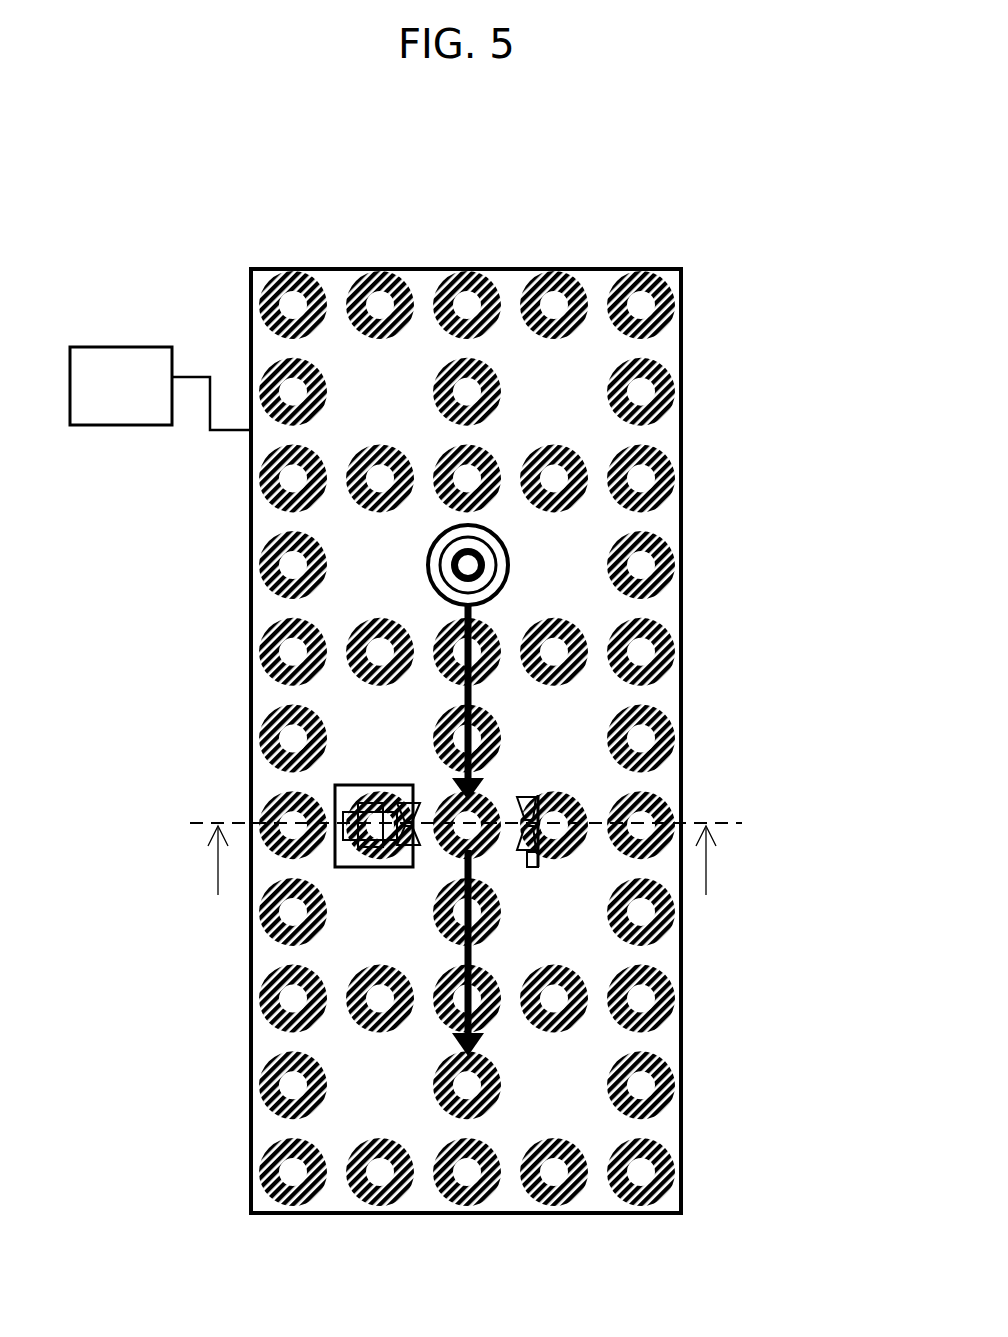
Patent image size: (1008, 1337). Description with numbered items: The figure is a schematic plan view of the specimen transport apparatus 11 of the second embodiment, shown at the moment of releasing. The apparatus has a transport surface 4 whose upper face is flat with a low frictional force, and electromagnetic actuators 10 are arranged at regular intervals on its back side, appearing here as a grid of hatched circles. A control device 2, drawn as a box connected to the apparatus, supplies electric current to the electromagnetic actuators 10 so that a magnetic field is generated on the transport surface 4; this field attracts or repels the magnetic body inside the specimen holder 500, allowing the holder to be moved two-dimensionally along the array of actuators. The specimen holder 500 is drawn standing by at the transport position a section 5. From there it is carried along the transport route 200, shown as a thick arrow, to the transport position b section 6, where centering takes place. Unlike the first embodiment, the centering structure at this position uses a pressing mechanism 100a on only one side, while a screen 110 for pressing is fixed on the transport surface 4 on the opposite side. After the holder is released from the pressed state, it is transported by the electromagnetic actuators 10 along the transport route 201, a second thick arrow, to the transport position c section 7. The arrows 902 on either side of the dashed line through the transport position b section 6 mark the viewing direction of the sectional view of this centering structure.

The control device 2 is at (145, 347).
The transport surface 4 is at (552, 385).
The transport position a section 5 is at (495, 548).
The transport position b section 6 is at (483, 852).
The transport position c section 7 is at (485, 1093).
The electromagnetic actuator 10 is at (262, 578).
The specimen transport apparatus 11 is at (337, 268).
The pressing mechanism 100a is at (345, 795).
The screen 110 is at (530, 792).
The transport route 200 is at (470, 698).
The transport route 201 is at (470, 955).
The specimen holder 500 is at (500, 592).
The arrows 902 is at (451, 859).